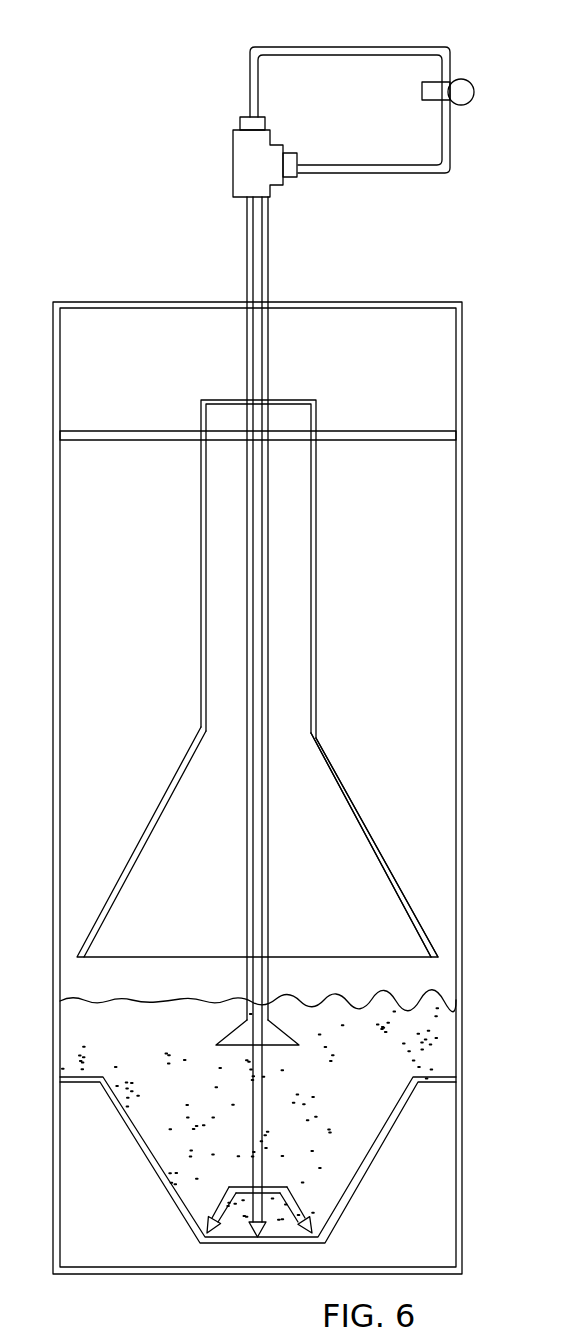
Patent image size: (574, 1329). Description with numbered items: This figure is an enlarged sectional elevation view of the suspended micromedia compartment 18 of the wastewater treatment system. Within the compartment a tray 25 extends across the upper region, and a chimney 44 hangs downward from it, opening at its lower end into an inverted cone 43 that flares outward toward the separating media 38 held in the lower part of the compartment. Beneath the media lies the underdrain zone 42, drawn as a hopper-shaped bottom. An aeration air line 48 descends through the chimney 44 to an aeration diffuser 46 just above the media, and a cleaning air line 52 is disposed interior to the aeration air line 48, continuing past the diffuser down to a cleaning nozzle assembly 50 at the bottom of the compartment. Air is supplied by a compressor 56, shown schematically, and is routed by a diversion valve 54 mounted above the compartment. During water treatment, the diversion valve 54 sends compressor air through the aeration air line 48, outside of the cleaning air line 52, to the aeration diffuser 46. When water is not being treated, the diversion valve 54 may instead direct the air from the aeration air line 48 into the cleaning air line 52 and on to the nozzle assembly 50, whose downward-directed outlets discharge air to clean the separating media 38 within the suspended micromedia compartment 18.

The suspended micromedia compartment 18 is at (150, 551).
The tray 25 is at (423, 429).
The separating media 38 is at (427, 1025).
The underdrain zone 42 is at (422, 1218).
The inverted cone 43 is at (377, 897).
The chimney 44 is at (293, 527).
The aeration diffuser 46 is at (278, 1035).
The aeration air line 48 is at (440, 173).
The cleaning nozzle assembly 50 is at (297, 1193).
The cleaning air line 52 is at (305, 46).
The diversion valve 54 is at (258, 165).
The compressor 56 is at (466, 86).